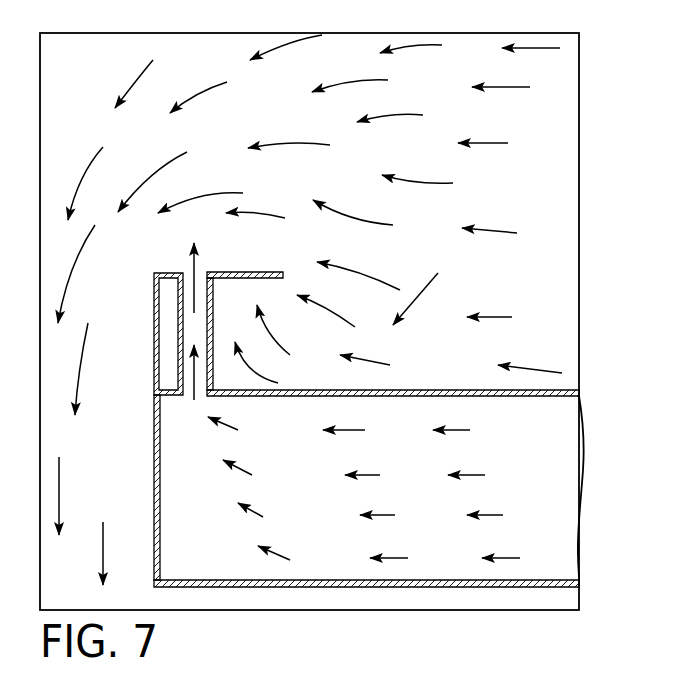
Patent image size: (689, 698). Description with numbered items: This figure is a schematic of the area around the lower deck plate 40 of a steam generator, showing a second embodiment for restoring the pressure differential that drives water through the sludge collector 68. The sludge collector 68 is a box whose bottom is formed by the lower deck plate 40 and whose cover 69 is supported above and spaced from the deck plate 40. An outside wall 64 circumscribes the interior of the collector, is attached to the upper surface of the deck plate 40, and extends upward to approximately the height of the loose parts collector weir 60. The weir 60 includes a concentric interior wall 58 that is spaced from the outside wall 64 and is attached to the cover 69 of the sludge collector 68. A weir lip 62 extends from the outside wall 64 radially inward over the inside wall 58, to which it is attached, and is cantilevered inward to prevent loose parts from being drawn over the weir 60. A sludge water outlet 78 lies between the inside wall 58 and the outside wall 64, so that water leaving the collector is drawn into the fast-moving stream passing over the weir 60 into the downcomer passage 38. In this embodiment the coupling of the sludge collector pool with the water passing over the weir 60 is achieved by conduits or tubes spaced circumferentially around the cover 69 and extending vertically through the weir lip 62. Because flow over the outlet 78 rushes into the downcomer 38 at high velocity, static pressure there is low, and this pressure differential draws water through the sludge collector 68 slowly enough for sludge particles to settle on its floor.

The downcomer passage 38 is at (131, 418).
The lower deck plate 40 is at (385, 588).
The interior wall 58 is at (213, 365).
The weir 60 is at (160, 273).
The weir lip 62 is at (223, 273).
The outside wall 64 is at (154, 497).
The sludge collector 68 is at (434, 291).
The cover 69 is at (407, 390).
The sludge water outlet 78 is at (193, 327).